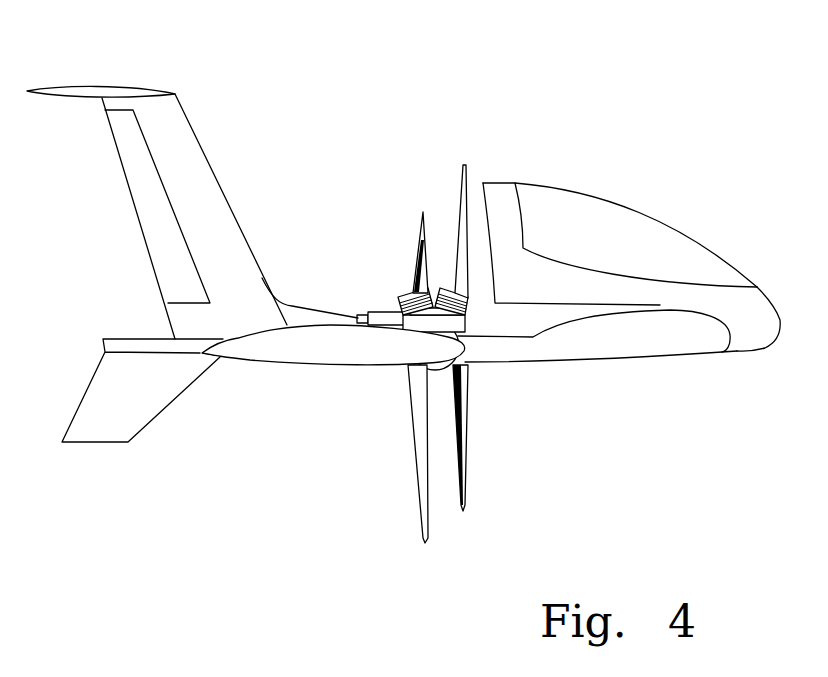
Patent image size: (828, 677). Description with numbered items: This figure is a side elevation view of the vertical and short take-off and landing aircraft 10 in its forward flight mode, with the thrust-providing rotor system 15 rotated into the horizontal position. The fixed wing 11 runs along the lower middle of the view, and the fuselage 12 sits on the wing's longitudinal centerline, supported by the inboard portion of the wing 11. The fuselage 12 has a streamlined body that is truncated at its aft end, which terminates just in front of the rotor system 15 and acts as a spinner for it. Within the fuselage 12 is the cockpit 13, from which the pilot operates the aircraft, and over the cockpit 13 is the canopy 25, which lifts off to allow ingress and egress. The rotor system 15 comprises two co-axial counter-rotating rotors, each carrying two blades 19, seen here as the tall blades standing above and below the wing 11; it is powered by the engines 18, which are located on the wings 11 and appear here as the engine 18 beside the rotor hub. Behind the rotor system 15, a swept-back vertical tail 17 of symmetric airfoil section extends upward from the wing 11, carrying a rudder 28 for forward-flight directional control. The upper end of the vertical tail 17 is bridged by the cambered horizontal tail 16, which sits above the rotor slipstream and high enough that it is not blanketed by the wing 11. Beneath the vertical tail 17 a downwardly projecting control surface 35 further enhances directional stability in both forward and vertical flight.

The vertical and short take-off and landing aircraft 10 is at (588, 82).
The fixed wing 11 is at (342, 347).
The fuselage 12 is at (550, 277).
The cockpit 13 is at (615, 235).
The rotor system 15 is at (425, 125).
The horizontal tail 16 is at (107, 85).
The vertical tail 17 is at (202, 228).
The engine 18 is at (402, 293).
The rotor blade 19 is at (420, 412).
The canopy 25 is at (710, 233).
The rudder 28 is at (140, 167).
The downwardly projecting control surface 35 is at (153, 390).